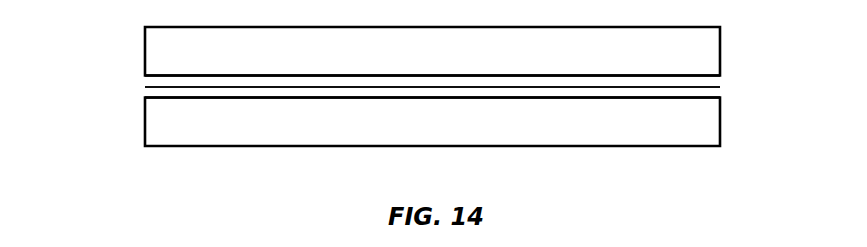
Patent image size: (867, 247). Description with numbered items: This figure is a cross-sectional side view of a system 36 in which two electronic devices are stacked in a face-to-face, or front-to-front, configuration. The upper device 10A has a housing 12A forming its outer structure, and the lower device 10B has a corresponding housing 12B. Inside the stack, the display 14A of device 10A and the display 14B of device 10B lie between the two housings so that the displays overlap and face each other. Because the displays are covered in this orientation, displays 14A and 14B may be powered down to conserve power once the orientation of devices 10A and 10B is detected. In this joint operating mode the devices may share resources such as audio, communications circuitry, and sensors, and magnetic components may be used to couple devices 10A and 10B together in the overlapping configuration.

The laminated glass article stack 36 is at (63, 22).
The device 10A is at (130, 28).
The device 10B is at (130, 90).
The housing 12A is at (720, 43).
The housing 12B is at (720, 133).
The display 14A is at (720, 77).
The display 14B is at (720, 90).